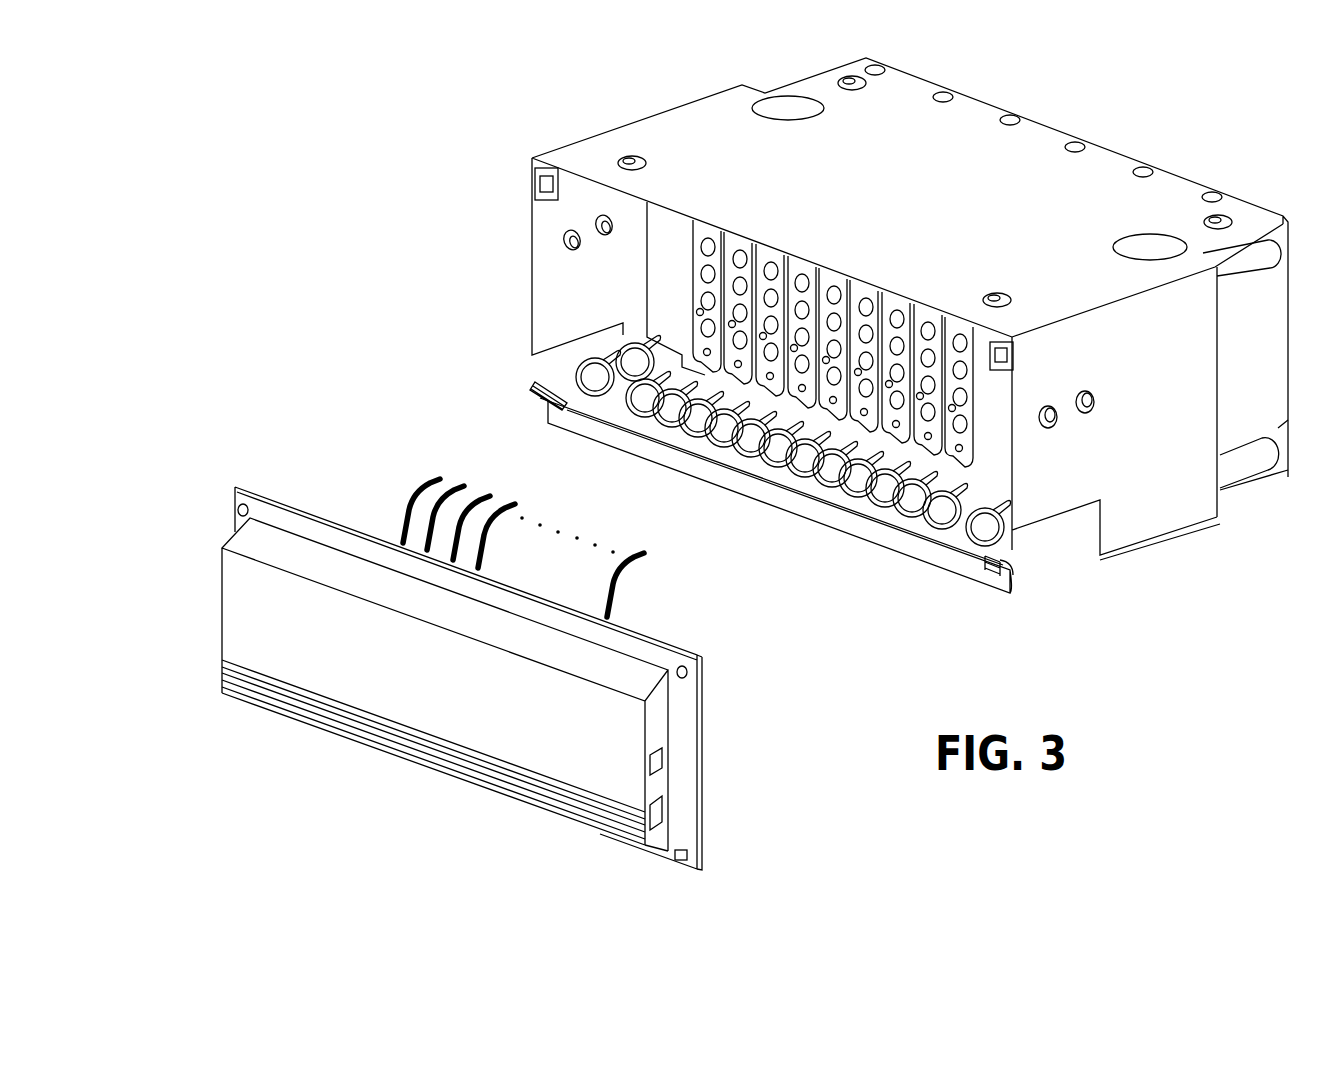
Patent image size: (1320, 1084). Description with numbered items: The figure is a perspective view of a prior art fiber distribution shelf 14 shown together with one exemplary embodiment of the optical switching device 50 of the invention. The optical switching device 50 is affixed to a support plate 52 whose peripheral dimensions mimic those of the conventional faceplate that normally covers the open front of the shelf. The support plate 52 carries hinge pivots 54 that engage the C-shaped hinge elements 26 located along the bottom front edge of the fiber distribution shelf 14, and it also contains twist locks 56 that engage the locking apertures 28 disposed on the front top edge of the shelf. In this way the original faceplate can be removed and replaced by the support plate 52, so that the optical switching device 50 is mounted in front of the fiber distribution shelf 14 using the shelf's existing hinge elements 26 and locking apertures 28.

The fiber distribution shelf 14 is at (1167, 197).
The C-shaped hinge elements 26 is at (540, 397).
The locking apertures 28 is at (535, 182).
The optical switching device 50 is at (435, 708).
The support plate 52 is at (683, 741).
The hinge pivots 54 is at (682, 862).
The twist locks 56 is at (238, 510).